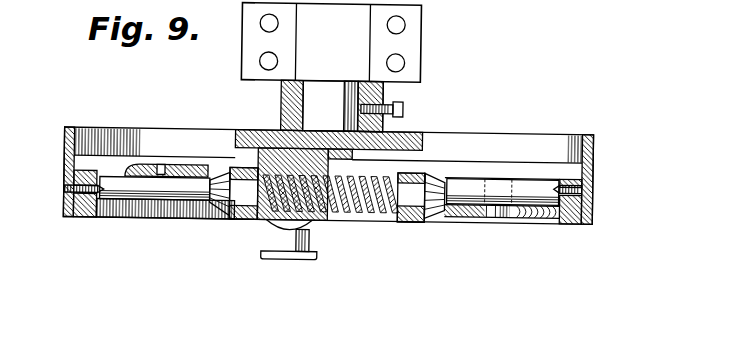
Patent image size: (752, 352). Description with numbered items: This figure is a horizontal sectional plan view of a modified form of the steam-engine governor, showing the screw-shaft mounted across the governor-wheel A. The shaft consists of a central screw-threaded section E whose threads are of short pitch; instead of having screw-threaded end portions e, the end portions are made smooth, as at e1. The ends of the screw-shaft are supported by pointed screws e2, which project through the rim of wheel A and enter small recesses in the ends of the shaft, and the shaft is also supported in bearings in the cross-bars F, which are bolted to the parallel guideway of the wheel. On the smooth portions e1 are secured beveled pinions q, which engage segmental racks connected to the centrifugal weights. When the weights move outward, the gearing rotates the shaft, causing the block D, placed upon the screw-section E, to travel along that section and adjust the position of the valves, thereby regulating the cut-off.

The wheel A is at (330, 112).
The screw-threaded end portions e is at (138, 188).
The smooth end portions e1 is at (537, 197).
The pointed screws e2 is at (610, 188).
The beveled pinions q is at (220, 200).
The cross-bars F is at (248, 213).
The central screw-threaded section E is at (378, 197).
The block D is at (312, 222).